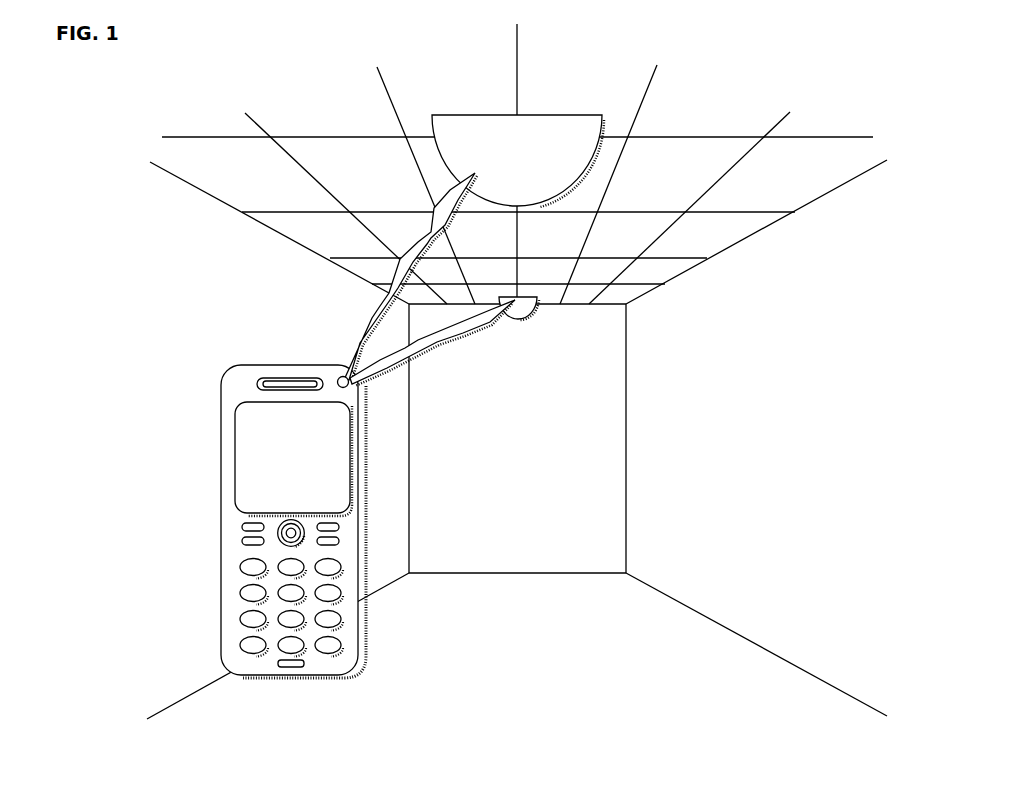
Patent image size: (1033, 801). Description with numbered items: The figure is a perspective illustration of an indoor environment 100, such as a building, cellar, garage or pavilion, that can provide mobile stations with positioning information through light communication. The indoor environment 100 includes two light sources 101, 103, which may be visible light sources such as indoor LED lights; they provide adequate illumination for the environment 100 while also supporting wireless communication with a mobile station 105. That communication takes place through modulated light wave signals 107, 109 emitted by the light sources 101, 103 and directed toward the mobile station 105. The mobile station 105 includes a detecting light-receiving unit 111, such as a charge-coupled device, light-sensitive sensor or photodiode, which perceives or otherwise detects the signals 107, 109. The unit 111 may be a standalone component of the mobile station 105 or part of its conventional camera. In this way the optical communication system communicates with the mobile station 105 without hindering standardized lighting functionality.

The indoor environment 100 is at (752, 338).
The light source 101 is at (431, 122).
The light source 103 is at (536, 306).
The mobile station 105 is at (219, 428).
The modulated light wave signal 107 is at (355, 347).
The modulated light wave signal 109 is at (432, 332).
The detecting light-receiving unit 111 is at (344, 390).